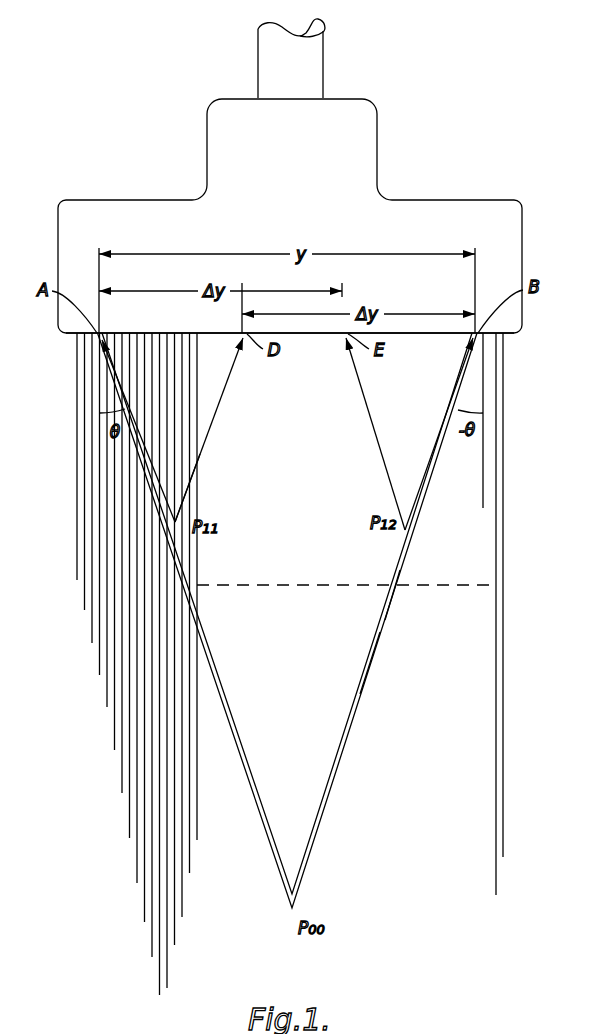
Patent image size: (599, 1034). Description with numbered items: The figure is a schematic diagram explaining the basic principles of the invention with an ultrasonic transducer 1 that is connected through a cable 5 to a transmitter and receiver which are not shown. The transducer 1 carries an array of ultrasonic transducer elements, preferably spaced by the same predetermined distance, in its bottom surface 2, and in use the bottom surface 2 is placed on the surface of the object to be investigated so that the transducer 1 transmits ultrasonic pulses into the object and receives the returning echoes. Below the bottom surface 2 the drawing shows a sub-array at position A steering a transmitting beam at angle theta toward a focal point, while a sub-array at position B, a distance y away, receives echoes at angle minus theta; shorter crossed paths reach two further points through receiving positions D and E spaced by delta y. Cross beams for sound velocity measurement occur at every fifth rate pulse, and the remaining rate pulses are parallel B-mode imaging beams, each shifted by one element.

The ultrasonic transducer 1 is at (485, 199).
The bottom surface 2 is at (299, 334).
The cable 5 is at (318, 43).